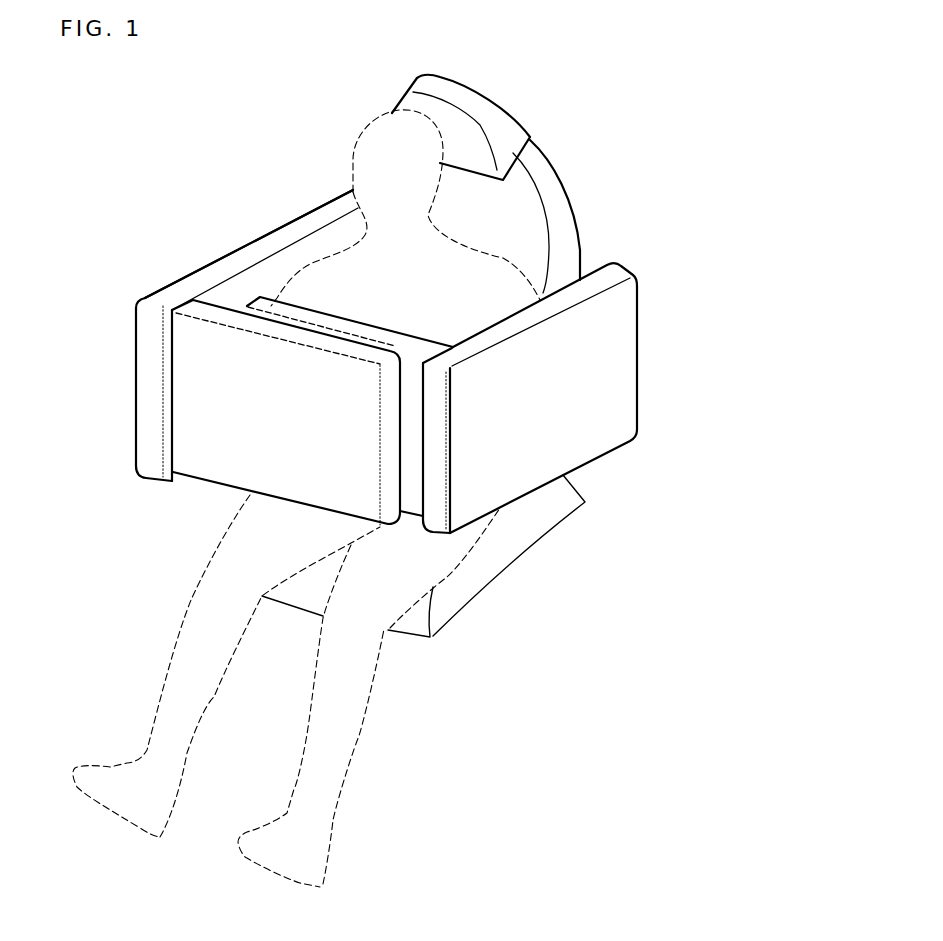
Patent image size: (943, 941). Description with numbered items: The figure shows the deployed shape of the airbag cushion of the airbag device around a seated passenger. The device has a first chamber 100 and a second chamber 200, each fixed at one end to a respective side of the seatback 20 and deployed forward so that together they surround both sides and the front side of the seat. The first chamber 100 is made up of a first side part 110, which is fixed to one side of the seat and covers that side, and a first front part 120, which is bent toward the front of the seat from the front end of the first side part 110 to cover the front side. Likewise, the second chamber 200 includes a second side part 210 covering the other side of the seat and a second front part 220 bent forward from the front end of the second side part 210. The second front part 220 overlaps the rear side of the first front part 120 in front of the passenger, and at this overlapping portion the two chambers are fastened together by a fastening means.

The seatback 20 is at (558, 212).
The first chamber 100 is at (126, 296).
The first side part 110 is at (238, 268).
The first front part 120 is at (223, 412).
The second chamber 200 is at (646, 459).
The second side part 210 is at (612, 372).
The second front part 220 is at (364, 334).